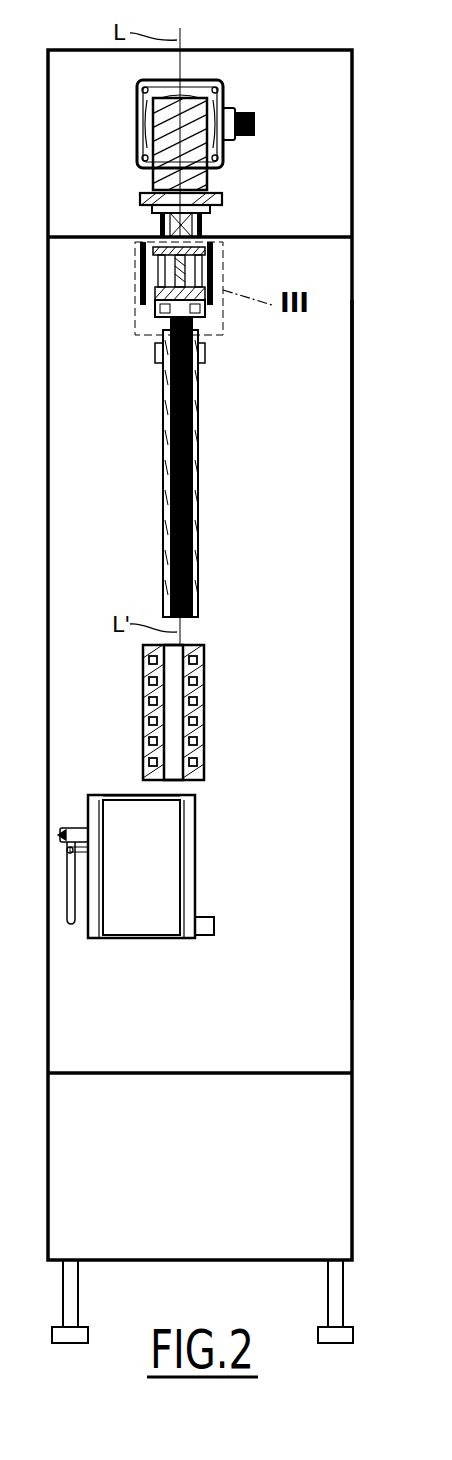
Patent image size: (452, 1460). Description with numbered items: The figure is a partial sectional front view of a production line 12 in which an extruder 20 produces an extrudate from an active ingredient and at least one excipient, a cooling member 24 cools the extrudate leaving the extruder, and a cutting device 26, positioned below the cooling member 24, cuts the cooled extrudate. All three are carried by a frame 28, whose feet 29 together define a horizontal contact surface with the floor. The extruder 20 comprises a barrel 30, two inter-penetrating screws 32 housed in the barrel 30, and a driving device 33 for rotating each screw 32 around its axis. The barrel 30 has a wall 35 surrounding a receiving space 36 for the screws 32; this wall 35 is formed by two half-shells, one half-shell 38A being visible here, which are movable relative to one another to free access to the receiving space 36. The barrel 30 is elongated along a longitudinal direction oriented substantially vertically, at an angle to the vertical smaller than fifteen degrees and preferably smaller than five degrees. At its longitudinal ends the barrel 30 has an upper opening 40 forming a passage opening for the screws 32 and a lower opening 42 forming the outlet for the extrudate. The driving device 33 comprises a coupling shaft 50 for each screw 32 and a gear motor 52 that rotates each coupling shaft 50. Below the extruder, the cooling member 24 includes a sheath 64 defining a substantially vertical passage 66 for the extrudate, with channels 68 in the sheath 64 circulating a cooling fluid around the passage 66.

The production line 12 is at (266, 42).
The extruder 20 is at (122, 396).
The cooling member 24 is at (203, 720).
The cutting device 26 is at (228, 842).
The frame 28 is at (352, 860).
The feet 29 is at (72, 1284).
The barrel 30 is at (207, 481).
The screws 32 is at (198, 456).
The driving device 33 is at (247, 186).
The wall 35 is at (198, 498).
The receiving space 36 is at (164, 514).
The half-shell 38A is at (198, 587).
The upper opening 40 is at (205, 312).
The lower opening 42 is at (183, 619).
The coupling shaft 50 is at (167, 281).
The gear motor 52 is at (222, 222).
The sheath 64 is at (143, 663).
The passage 66 is at (176, 752).
The channels 68 is at (150, 701).